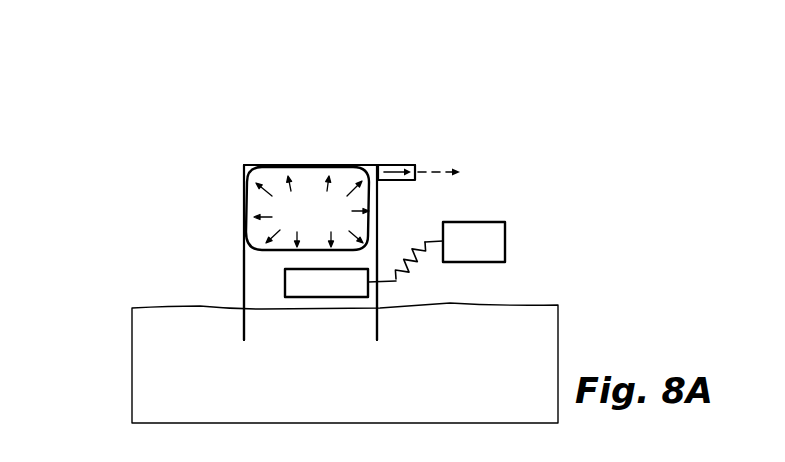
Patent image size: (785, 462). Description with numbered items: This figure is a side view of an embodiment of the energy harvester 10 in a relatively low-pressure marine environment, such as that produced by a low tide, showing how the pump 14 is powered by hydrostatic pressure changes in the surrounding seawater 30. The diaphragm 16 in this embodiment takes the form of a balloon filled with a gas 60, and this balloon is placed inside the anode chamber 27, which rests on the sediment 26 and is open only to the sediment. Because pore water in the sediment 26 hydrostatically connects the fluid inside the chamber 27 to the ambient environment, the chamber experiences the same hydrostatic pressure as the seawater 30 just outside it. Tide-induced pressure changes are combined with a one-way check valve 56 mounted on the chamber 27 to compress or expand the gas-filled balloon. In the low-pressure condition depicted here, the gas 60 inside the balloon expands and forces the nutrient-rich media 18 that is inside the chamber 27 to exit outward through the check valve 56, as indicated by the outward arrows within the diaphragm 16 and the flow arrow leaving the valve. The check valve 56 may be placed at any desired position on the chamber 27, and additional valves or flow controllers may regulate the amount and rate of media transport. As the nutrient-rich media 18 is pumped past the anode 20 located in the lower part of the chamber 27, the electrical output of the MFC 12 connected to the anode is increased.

The energy harvester 10 is at (134, 56).
The seawater 30 is at (178, 139).
The diaphragm 16 is at (257, 165).
The pump 14 is at (222, 163).
The gas 60 is at (322, 219).
The check valve 56 is at (391, 165).
The nutrient-rich media 18 is at (432, 170).
The anode chamber 27 is at (255, 287).
The anode 20 is at (305, 297).
The MFC 12 is at (531, 213).
The sediment 26 is at (476, 397).